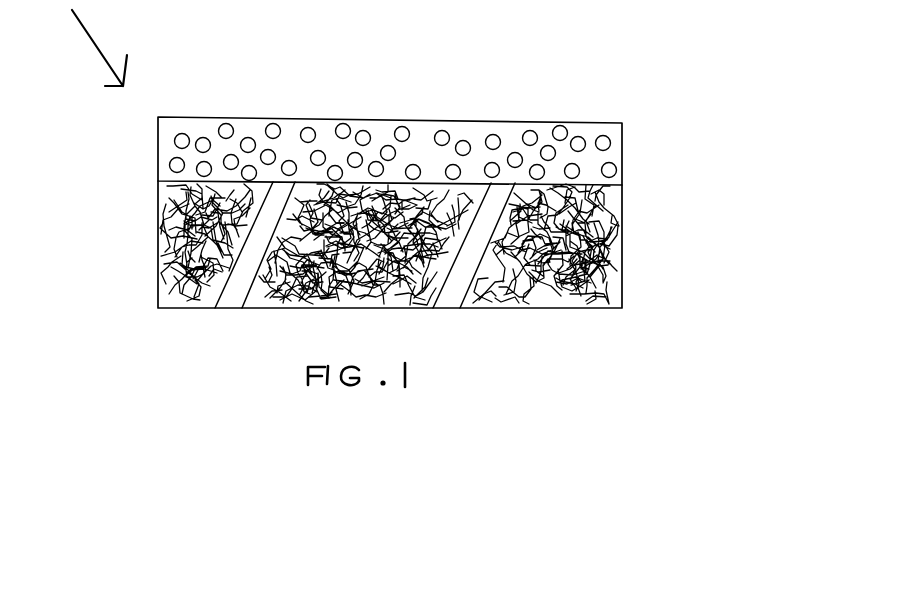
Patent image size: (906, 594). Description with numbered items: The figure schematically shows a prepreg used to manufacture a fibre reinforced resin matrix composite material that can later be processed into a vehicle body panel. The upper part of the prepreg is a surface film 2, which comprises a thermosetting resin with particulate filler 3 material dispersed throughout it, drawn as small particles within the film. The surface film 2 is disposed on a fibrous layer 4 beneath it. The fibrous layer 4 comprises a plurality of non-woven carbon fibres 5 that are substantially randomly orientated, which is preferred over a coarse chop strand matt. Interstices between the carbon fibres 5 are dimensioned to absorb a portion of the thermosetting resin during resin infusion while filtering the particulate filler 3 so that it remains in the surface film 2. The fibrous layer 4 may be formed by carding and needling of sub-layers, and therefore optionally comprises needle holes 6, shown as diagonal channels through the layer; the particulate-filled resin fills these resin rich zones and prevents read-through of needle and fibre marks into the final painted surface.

The surface film 2 is at (458, 100).
The particulate filler 3 is at (559, 135).
The fibrous layer 4 is at (465, 306).
The non-woven carbon fibres 5 is at (555, 263).
The needle holes 6 is at (460, 278).